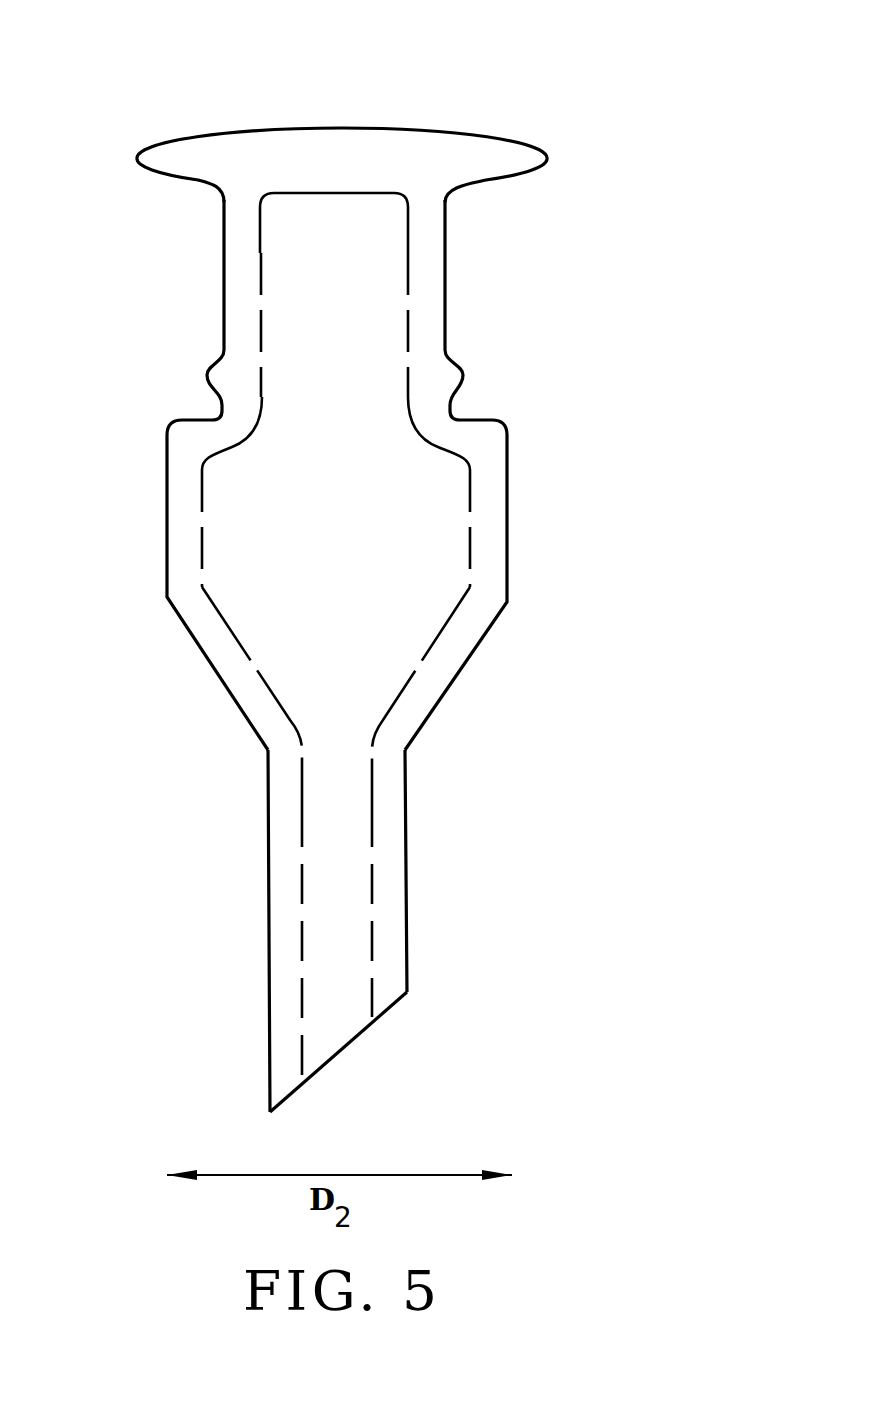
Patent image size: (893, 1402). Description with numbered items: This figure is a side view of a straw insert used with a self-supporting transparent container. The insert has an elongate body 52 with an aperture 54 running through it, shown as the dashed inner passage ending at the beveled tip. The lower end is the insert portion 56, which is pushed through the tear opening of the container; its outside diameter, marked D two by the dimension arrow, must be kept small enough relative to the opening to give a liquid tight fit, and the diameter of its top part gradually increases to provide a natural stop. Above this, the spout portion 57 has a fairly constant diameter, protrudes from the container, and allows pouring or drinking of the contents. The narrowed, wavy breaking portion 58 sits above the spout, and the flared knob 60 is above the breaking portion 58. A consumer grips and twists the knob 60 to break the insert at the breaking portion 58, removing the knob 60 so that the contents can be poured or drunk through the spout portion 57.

The elongate body 52 is at (237, 705).
The aperture 54 is at (337, 1027).
The insert portion 56 is at (427, 862).
The spout portion 57 is at (165, 473).
The breaking portion 58 is at (493, 397).
The knob 60 is at (520, 118).